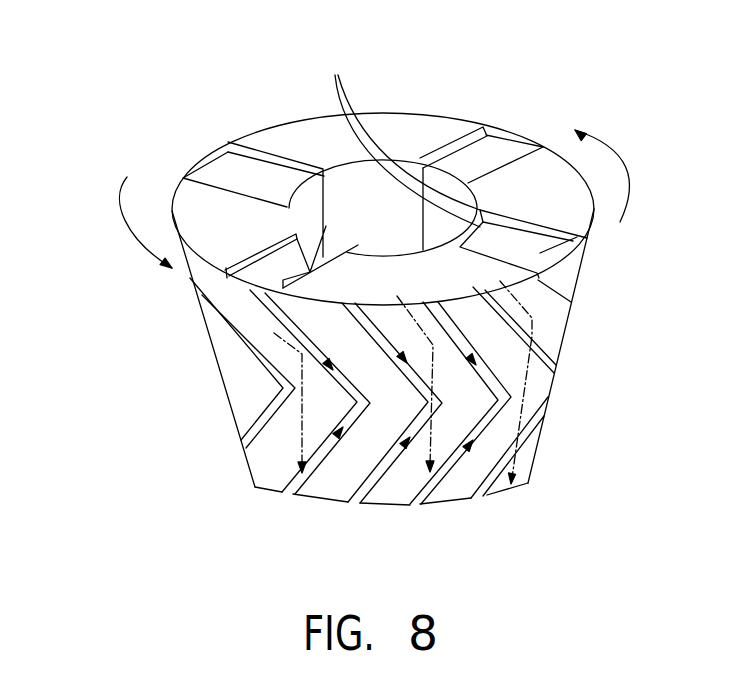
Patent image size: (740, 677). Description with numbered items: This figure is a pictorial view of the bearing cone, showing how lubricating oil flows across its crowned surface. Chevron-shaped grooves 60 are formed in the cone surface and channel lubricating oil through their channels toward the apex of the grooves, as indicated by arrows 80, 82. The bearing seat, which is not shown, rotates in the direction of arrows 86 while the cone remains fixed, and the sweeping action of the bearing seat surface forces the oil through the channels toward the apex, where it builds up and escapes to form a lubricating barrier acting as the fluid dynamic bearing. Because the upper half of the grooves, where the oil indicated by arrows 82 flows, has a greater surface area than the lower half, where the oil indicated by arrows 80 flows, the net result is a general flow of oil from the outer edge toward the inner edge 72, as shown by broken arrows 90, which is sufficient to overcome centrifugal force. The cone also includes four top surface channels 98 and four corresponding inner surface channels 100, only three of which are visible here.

The grooves 60 is at (323, 443).
The inner edge 72 is at (530, 484).
The arrows 80 is at (328, 441).
The arrows 82 is at (315, 342).
The arrows 86 is at (118, 222).
The broken arrows 90 is at (389, 372).
The top surface channels 98 is at (270, 173).
The inner surface channels 100 is at (328, 228).